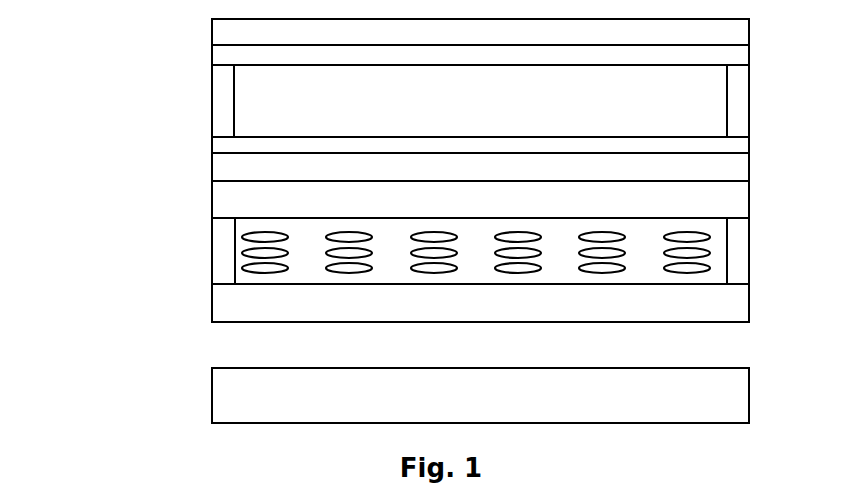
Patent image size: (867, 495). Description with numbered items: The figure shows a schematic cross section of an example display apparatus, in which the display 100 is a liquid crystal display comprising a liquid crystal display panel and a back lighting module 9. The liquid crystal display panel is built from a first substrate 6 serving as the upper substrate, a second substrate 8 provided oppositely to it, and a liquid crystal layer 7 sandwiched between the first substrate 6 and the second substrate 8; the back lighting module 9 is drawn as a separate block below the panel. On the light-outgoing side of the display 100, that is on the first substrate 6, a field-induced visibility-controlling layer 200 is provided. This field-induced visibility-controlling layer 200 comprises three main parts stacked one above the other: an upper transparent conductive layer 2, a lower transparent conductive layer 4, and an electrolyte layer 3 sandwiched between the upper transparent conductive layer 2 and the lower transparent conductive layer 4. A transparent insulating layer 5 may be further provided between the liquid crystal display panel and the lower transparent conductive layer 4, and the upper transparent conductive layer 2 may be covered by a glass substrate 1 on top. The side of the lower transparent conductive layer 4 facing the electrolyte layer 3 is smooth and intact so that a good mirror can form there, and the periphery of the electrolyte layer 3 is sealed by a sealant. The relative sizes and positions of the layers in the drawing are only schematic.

The glass substrate 1 is at (212, 35).
The upper transparent conductive layer 2 is at (212, 54).
The electrolyte layer 3 is at (272, 102).
The lower transparent conductive layer 4 is at (212, 147).
The transparent insulating layer 5 is at (212, 163).
The first substrate 6 is at (212, 199).
The liquid crystal layer 7 is at (248, 245).
The second substrate 8 is at (212, 302).
The back lighting module 9 is at (212, 396).
The display 100 is at (132, 392).
The field-induced visibility-controlling layer 200 is at (131, 58).